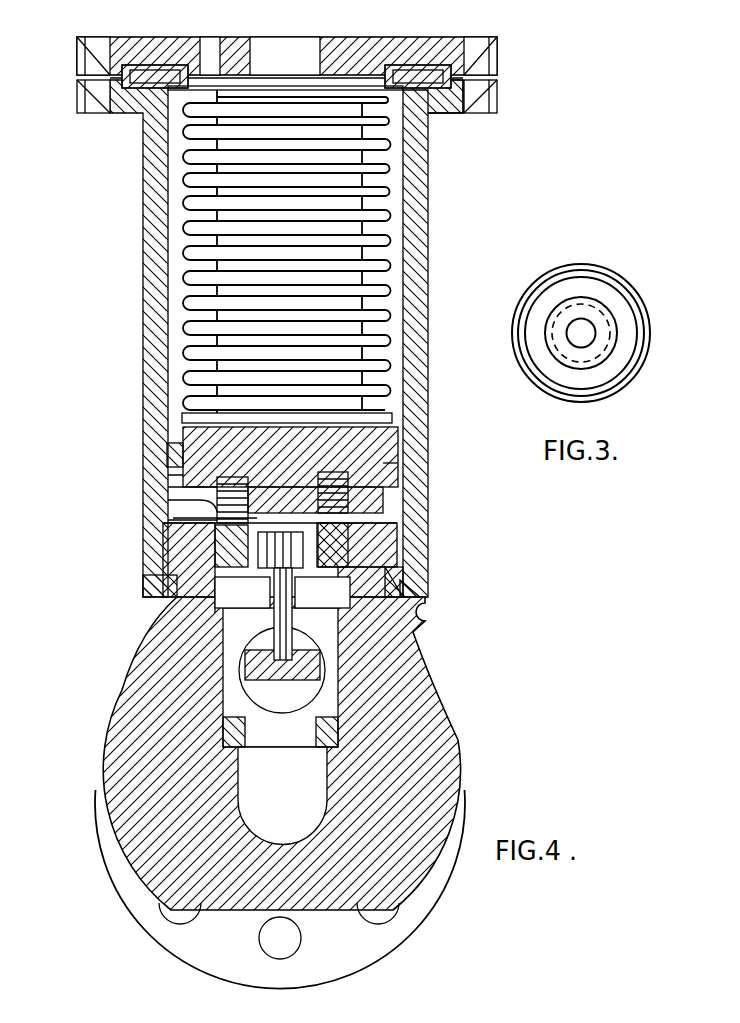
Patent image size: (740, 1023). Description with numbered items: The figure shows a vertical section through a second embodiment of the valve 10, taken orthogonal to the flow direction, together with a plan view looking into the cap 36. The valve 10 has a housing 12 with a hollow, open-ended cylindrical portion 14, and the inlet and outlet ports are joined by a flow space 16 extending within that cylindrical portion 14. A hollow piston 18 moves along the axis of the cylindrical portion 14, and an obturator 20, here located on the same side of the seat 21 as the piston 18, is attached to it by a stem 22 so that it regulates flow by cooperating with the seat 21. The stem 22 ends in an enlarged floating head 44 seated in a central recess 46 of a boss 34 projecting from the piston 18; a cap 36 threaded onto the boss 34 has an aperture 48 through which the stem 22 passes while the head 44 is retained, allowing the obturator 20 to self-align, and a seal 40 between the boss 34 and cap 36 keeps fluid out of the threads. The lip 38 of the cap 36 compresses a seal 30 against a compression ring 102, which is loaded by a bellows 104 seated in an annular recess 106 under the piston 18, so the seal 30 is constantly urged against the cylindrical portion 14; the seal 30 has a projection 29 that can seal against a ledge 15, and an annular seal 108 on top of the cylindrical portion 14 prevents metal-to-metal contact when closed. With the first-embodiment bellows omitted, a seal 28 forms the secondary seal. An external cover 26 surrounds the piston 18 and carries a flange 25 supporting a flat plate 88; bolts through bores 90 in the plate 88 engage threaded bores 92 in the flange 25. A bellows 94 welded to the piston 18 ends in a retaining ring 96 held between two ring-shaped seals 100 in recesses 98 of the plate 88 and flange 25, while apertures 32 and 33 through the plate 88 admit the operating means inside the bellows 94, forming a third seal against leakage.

In FIG. 4, the valve 10 is at (464, 724).
In FIG. 4, the housing 12 is at (410, 687).
In FIG. 4, the cylindrical portion 14 is at (412, 627).
In FIG. 4, the ledge 15 is at (223, 612).
In FIG. 4, the flow space 16 is at (300, 600).
In FIG. 4, the piston 18 is at (378, 433).
In FIG. 4, the obturator 20 is at (262, 668).
In FIG. 4, the seat 21 is at (243, 733).
In FIG. 4, the stem 22 is at (248, 665).
In FIG. 4, the flange 25 is at (430, 113).
In FIG. 4, the external cover 26 is at (428, 228).
In FIG. 4, the seal 28 is at (227, 477).
In FIG. 4, the projection 29 is at (225, 560).
In FIG. 4, the seal 30 is at (215, 537).
In FIG. 4, the aperture 32 is at (275, 50).
In FIG. 4, the aperture 33 is at (205, 55).
In FIG. 4, the boss 34 is at (330, 512).
In FIG. 4, the cap 36 is at (330, 540).
In FIG. 3, the cap 36 is at (563, 288).
In FIG. 4, the lip 38 is at (165, 588).
In FIG. 3, the lip 38 is at (613, 275).
In FIG. 4, the seal 40 is at (305, 583).
In FIG. 4, the head 44 is at (385, 565).
In FIG. 4, the recess 46 is at (300, 550).
In FIG. 4, the aperture 48 is at (270, 588).
In FIG. 3, the aperture 48 is at (577, 331).
In FIG. 4, the plate 88 is at (382, 50).
In FIG. 4, the bores 90 is at (95, 55).
In FIG. 4, the bores 92 is at (95, 95).
In FIG. 4, the bellows 94 is at (193, 208).
In FIG. 4, the retaining ring 96 is at (480, 108).
In FIG. 4, the recesses 98 is at (128, 68).
In FIG. 4, the seal 100 is at (152, 68).
In FIG. 4, the compression ring 102 is at (172, 480).
In FIG. 4, the bellows 104 is at (348, 500).
In FIG. 4, the annular recess 106 is at (167, 428).
In FIG. 4, the annular seal 108 is at (200, 520).